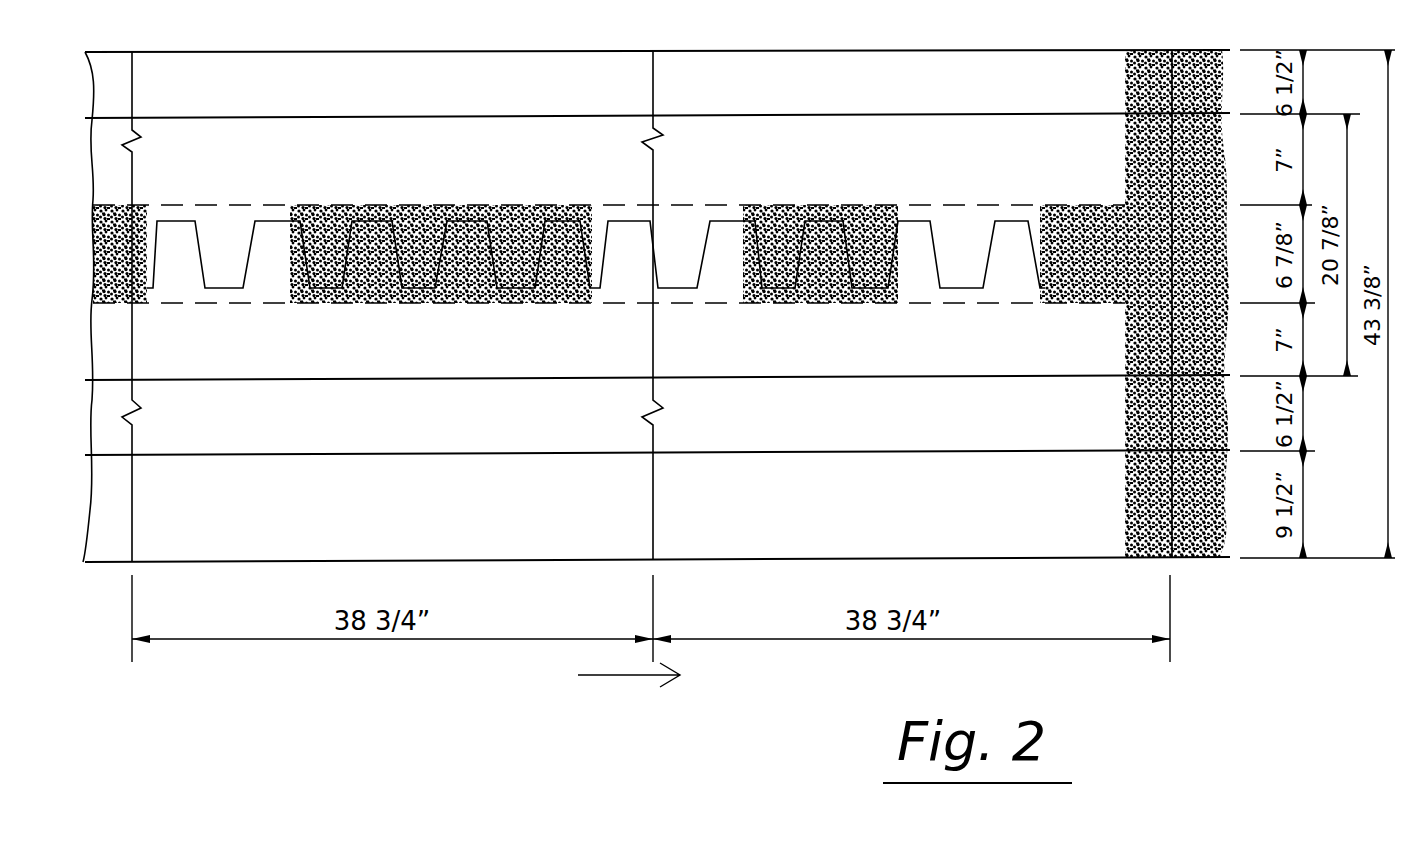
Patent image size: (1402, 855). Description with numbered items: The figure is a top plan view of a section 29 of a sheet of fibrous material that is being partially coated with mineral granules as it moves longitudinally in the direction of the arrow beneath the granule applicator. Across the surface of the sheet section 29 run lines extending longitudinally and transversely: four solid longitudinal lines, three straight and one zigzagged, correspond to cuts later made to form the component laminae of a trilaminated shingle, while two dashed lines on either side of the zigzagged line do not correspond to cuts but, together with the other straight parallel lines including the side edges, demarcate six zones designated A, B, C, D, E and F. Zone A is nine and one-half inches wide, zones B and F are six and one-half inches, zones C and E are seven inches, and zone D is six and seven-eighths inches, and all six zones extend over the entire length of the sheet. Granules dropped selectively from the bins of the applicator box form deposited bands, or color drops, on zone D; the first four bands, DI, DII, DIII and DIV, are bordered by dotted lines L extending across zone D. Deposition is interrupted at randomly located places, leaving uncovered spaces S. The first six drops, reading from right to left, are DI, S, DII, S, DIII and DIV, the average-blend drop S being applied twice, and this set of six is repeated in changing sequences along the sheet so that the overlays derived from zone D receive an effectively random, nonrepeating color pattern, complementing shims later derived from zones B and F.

The sheet section 29 is at (898, 50).
The space S is at (230, 215).
The dotted lines L is at (137, 305).
The first color drop band DI is at (1047, 205).
The second color drop band DII is at (757, 205).
The third color drop band DIII is at (113, 205).
The fourth color drop band DIV is at (352, 205).
The zone A is at (1165, 498).
The zone B is at (1163, 405).
The zone C is at (1160, 350).
The zone D is at (1157, 235).
The zone E is at (1165, 148).
The zone F is at (1168, 70).